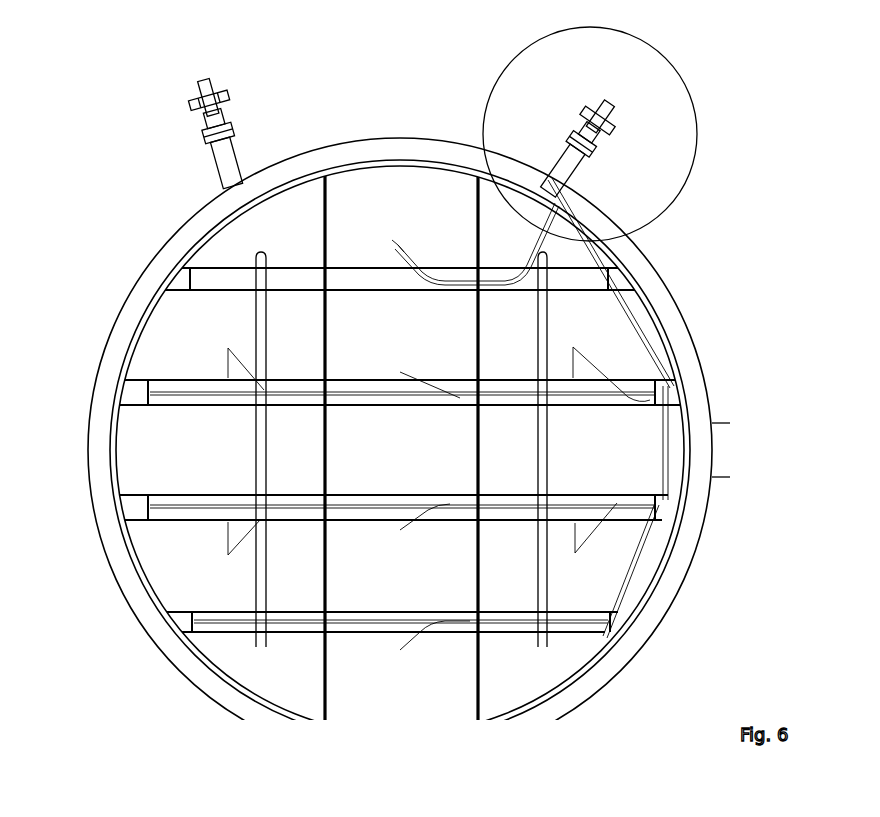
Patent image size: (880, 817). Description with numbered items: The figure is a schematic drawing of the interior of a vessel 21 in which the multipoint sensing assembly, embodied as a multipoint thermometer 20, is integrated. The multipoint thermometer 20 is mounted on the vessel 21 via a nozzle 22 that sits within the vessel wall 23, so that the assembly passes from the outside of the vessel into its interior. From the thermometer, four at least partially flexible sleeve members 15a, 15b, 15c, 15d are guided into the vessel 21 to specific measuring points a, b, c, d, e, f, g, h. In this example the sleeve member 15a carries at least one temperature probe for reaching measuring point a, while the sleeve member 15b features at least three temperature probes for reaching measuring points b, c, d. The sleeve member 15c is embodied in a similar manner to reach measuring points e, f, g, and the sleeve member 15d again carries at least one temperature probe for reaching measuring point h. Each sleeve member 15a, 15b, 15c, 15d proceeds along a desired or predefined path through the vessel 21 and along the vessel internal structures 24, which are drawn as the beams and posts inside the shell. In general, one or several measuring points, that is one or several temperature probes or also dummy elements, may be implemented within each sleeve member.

The multipoint thermometer 20 is at (690, 150).
The vessel 21 is at (64, 213).
The nozzle 22 is at (574, 168).
The vessel wall 23 is at (676, 288).
The sleeve member 15a is at (504, 243).
The sleeve member 15b is at (622, 306).
The sleeve member 15c is at (656, 428).
The sleeve member 15d is at (643, 578).
The vessel internal structures 24 is at (300, 617).
The measuring point a is at (401, 238).
The measuring point b is at (611, 368).
The measuring point c is at (430, 375).
The measuring point d is at (246, 363).
The measuring point e is at (587, 528).
The measuring point f is at (419, 526).
The measuring point g is at (234, 538).
The measuring point h is at (435, 644).